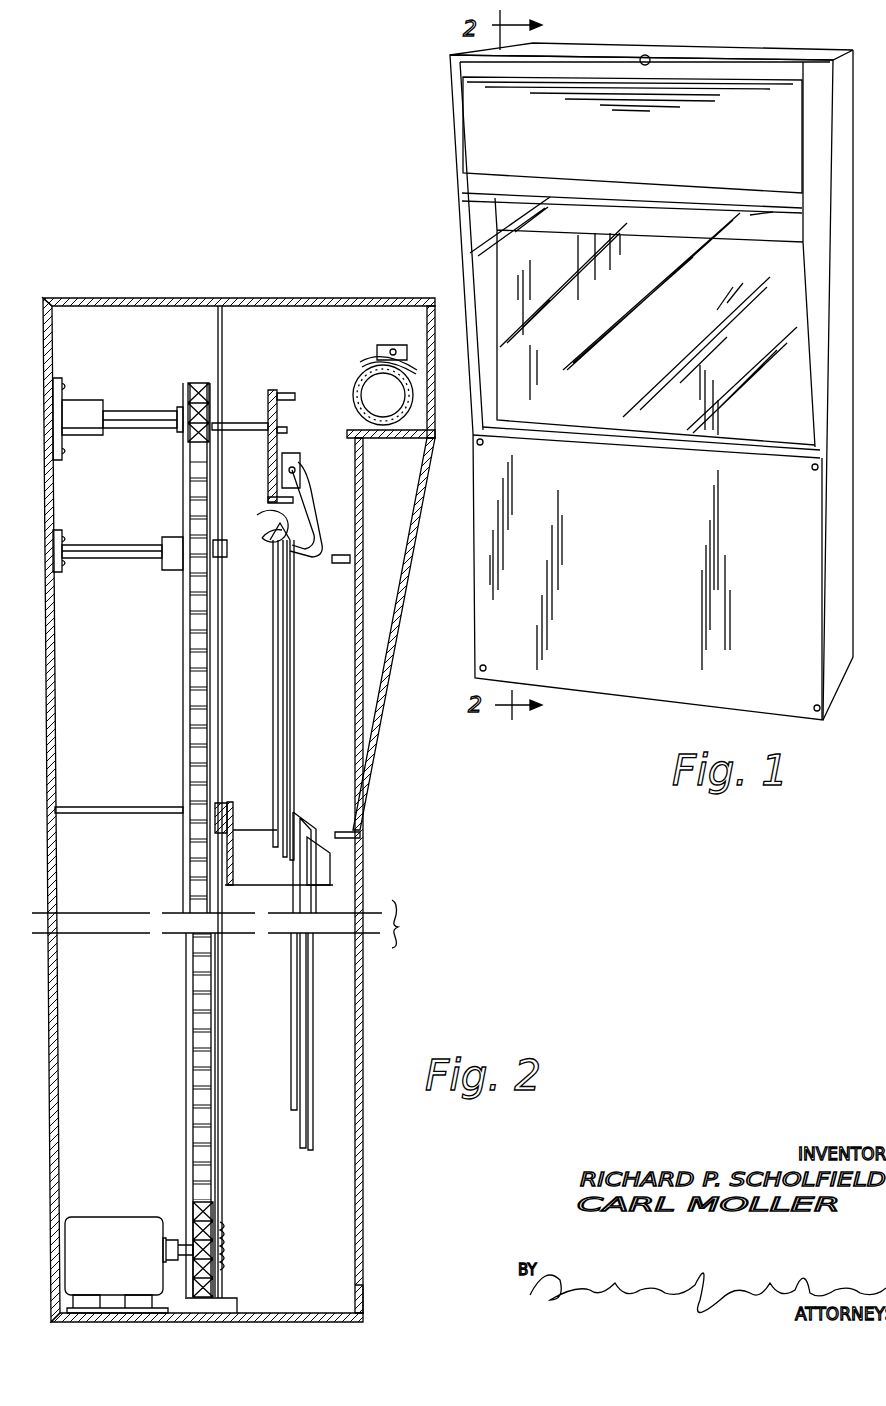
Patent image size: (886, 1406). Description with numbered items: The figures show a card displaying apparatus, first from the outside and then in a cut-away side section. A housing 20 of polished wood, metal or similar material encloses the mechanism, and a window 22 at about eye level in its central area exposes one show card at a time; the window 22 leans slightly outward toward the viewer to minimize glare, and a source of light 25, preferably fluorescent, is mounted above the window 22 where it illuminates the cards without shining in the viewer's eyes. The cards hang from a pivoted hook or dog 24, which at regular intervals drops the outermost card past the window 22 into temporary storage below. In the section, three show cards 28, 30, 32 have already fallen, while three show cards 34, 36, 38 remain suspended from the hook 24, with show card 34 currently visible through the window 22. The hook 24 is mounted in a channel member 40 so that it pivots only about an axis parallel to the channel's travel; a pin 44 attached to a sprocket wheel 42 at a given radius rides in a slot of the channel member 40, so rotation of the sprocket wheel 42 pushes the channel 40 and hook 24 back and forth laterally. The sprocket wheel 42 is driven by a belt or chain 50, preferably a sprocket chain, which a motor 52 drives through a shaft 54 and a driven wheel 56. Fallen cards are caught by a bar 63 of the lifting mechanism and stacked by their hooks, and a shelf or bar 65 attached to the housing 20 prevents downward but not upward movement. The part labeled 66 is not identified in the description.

In FIG. 2, the housing 20 is at (363, 1033).
In FIG. 1, the housing 20 is at (490, 545).
In FIG. 2, the window 22 is at (398, 678).
In FIG. 1, the window 22 is at (640, 401).
In FIG. 2, the pivoted hook or dog 24 is at (315, 478).
In FIG. 2, the source of light 25 is at (362, 366).
In FIG. 2, the show card 28 is at (303, 1152).
In FIG. 2, the show card 30 is at (297, 1148).
In FIG. 2, the show card 32 is at (290, 1110).
In FIG. 2, the show card 34 is at (284, 593).
In FIG. 2, the show card 36 is at (286, 624).
In FIG. 2, the show card 38 is at (281, 667).
In FIG. 2, the channel member 40 is at (273, 390).
In FIG. 2, the sprocket wheel 42 is at (212, 388).
In FIG. 2, the pin 44 is at (291, 452).
In FIG. 2, the belt or chain 50 is at (185, 665).
In FIG. 2, the motor 52 is at (83, 1220).
In FIG. 2, the shaft 54 is at (177, 1208).
In FIG. 2, the driven wheel 56 is at (225, 1258).
In FIG. 2, the bar 63 is at (310, 870).
In FIG. 2, the shelf or bar 65 is at (100, 813).
In FIG. 2, the clip 66 is at (263, 518).